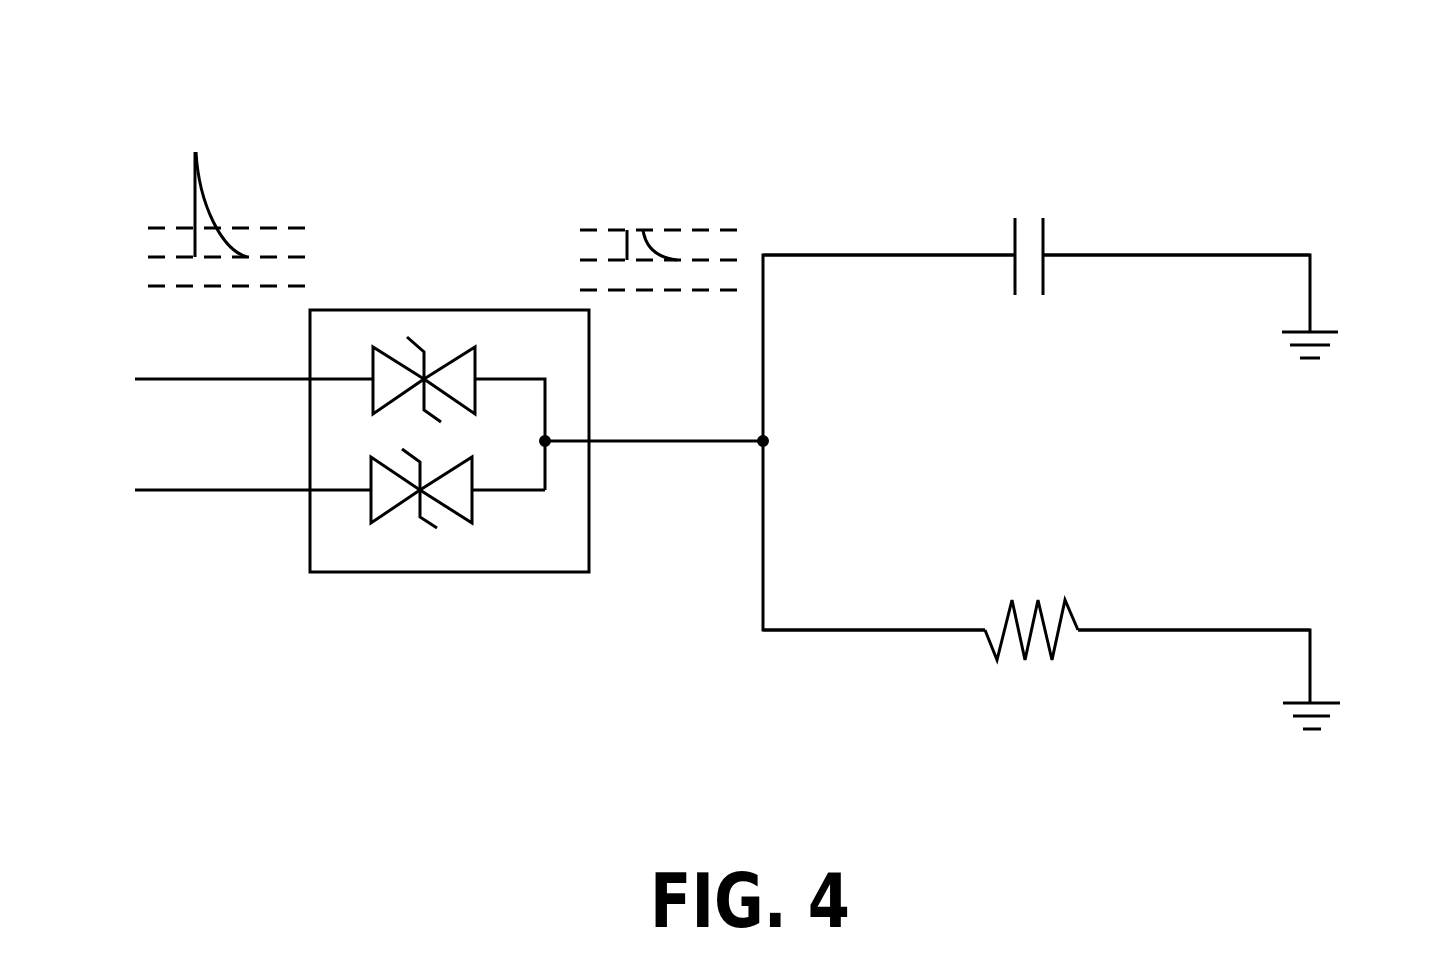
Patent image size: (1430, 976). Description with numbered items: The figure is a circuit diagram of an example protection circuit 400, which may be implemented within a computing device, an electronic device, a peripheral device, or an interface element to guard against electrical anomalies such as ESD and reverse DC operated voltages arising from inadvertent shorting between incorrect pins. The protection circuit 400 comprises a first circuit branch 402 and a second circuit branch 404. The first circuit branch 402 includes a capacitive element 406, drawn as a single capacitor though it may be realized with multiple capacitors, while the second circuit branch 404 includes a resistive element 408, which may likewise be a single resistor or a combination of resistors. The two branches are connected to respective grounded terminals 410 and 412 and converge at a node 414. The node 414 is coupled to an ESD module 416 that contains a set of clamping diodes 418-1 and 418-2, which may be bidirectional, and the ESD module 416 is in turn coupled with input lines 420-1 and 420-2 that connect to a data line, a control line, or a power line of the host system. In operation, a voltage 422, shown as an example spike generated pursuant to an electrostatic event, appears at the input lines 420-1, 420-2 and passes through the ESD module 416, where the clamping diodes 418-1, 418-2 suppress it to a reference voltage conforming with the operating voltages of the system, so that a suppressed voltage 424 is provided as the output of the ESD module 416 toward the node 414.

The protection circuit 400 is at (1246, 112).
The first circuit branch 402 is at (984, 190).
The second circuit branch 404 is at (1158, 729).
The capacitive element 406 is at (1043, 232).
The resistive element 408 is at (1030, 640).
The grounded terminal 410 is at (1323, 331).
The grounded terminal 412 is at (1328, 702).
The node 414 is at (766, 437).
The ESD module 416 is at (557, 572).
The clamping diode 418-1 is at (447, 362).
The clamping diode 418-2 is at (453, 513).
The input line 420-1 is at (173, 379).
The input line 420-2 is at (207, 490).
The voltage 422 is at (210, 368).
The suppressed voltage 424 is at (698, 428).